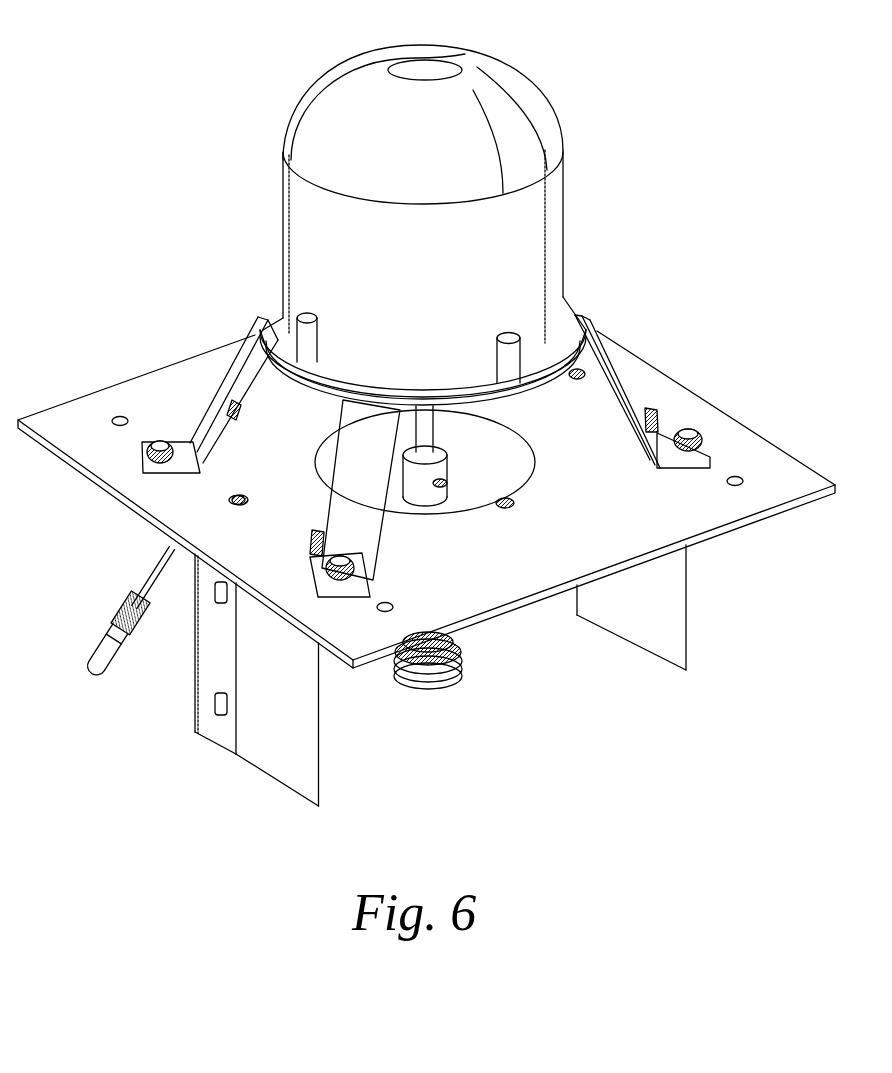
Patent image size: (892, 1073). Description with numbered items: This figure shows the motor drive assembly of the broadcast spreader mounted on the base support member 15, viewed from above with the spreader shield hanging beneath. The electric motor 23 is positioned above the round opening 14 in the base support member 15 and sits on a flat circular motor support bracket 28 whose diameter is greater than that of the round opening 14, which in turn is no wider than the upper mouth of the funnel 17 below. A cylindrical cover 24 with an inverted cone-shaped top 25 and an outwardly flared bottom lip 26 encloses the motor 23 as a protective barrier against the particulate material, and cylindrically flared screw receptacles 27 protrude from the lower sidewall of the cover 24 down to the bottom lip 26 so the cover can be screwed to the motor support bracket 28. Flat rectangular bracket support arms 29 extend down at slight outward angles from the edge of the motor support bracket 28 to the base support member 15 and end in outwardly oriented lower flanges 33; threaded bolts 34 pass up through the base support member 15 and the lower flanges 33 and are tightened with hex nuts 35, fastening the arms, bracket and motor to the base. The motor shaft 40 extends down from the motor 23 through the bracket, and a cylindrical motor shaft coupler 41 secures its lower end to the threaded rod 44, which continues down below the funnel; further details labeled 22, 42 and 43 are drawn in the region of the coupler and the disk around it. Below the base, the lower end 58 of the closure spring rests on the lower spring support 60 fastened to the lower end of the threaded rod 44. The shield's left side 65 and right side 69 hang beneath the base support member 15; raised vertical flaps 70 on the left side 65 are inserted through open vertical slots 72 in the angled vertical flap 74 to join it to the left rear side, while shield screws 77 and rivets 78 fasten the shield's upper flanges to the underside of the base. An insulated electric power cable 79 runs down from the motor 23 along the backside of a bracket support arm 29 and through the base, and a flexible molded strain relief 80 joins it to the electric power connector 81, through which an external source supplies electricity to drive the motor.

The round opening 14 is at (535, 460).
The base support member 15 is at (497, 574).
The funnel 17 is at (522, 435).
The hole in disk 22 is at (511, 506).
The electric motor 23 is at (440, 279).
The cylindrical cover 24 is at (566, 216).
The inverted cone-shaped top 25 is at (368, 80).
The outwardly flared bottom lip 26 is at (270, 312).
The screw receptacles 27 is at (319, 338).
The motor support bracket 28 is at (320, 386).
The bracket support arms 29 is at (262, 330).
The lower flanges 33 is at (168, 474).
The threaded bolts 34 is at (160, 440).
The hex nuts 35 is at (187, 434).
The motor shaft 40 is at (436, 420).
The motor shaft coupler 41 is at (425, 476).
The hub top 42 is at (447, 456).
The set screw 43 is at (450, 486).
The threaded rod 44 is at (463, 643).
The lower end of the closure spring 58 is at (412, 680).
The lower spring support 60 is at (444, 682).
The left side 65 is at (302, 699).
The right side 69 is at (648, 606).
The raised vertical flaps 70 is at (213, 596).
The open vertical slots 72 is at (213, 588).
The angled vertical flap 74 is at (226, 666).
The shield screws 77 is at (656, 412).
The rivets 78 is at (247, 498).
The electric power cable 79 is at (160, 560).
The strain relief 80 is at (124, 600).
The electric power connector 81 is at (96, 648).